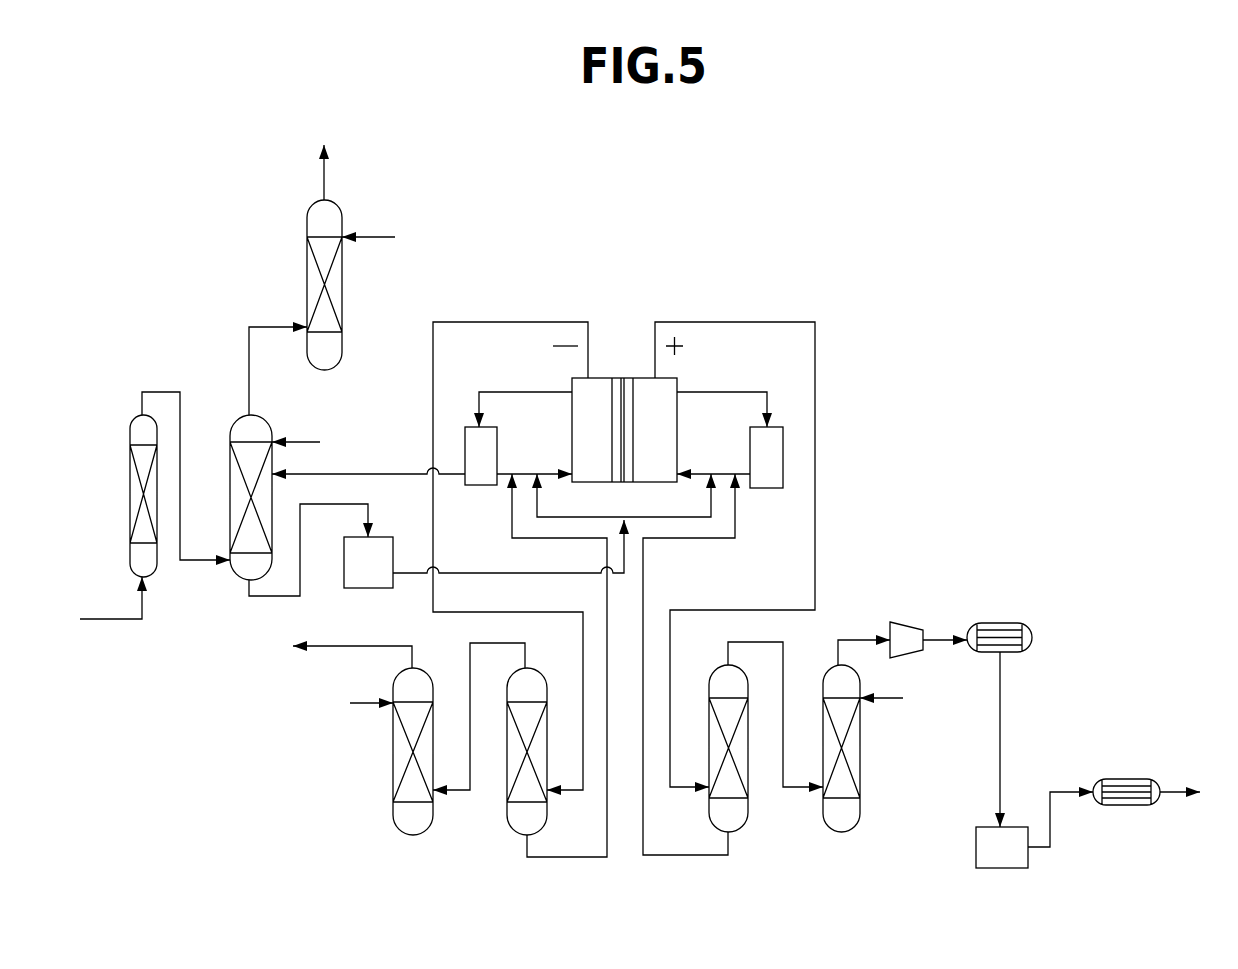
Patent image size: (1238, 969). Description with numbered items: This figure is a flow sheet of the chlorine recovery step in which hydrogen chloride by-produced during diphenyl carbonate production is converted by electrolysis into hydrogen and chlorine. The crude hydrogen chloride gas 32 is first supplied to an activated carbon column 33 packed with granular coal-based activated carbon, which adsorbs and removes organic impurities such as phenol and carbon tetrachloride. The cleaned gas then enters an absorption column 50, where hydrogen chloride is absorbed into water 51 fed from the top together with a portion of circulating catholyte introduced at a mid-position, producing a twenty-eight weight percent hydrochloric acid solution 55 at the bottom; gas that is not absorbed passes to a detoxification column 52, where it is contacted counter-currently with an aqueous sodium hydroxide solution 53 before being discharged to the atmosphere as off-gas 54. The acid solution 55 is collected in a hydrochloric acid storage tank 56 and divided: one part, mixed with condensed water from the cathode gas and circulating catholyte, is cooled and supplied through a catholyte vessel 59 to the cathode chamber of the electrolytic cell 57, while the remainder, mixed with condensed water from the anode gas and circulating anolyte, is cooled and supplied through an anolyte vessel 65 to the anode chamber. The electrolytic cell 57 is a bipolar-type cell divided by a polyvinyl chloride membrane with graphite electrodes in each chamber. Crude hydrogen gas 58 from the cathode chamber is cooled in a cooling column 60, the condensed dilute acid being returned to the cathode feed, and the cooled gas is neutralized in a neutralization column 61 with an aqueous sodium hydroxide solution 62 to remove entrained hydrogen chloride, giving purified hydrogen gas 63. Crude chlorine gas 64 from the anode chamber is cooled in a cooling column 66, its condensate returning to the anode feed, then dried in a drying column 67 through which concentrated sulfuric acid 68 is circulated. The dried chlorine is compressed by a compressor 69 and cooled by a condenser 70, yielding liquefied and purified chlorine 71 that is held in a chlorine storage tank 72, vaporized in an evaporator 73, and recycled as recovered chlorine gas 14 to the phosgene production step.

The recovered chlorine gas 14 is at (1198, 796).
The crude hydrogen chloride gas 32 is at (110, 615).
The activated carbon column 33 is at (123, 496).
The absorption column 50 is at (231, 497).
The water 51 is at (315, 440).
The detoxification column 52 is at (304, 285).
The aqueous sodium hydroxide solution 53 is at (385, 237).
The off-gas 54 is at (321, 156).
The 28 wt % hydrochloric acid solution 55 is at (308, 550).
The hydrochloric acid storage tank 56 is at (368, 578).
The electrolytic cell 57 is at (624, 448).
The crude hydrogen gas 58 is at (510, 539).
The catholyte reservoir 59 is at (482, 474).
The cooling column 60 is at (507, 754).
The neutralization column 61 is at (391, 754).
The aqueous sodium hydroxide solution 62 is at (353, 703).
The purified hydrogen gas 63 is at (333, 650).
The crude chlorine gas 64 is at (735, 537).
The anolyte reservoir 65 is at (767, 474).
The cooling column 66 is at (748, 751).
The drying column 67 is at (862, 751).
The concentrated sulfuric acid 68 is at (900, 696).
The compressor 69 is at (909, 623).
The condenser 70 is at (999, 620).
The liquefied and purified chlorine 71 is at (981, 739).
The chlorine storage tank 72 is at (1002, 865).
The evaporator 73 is at (1126, 777).